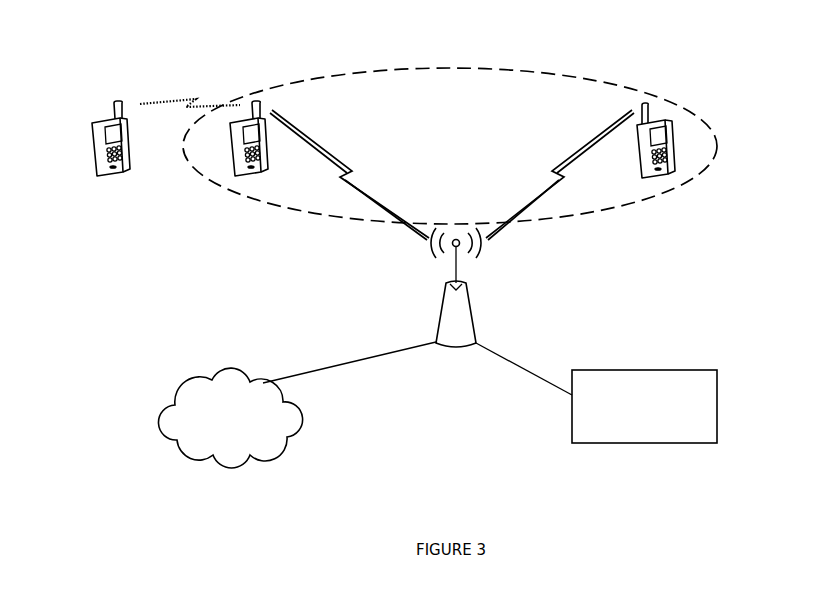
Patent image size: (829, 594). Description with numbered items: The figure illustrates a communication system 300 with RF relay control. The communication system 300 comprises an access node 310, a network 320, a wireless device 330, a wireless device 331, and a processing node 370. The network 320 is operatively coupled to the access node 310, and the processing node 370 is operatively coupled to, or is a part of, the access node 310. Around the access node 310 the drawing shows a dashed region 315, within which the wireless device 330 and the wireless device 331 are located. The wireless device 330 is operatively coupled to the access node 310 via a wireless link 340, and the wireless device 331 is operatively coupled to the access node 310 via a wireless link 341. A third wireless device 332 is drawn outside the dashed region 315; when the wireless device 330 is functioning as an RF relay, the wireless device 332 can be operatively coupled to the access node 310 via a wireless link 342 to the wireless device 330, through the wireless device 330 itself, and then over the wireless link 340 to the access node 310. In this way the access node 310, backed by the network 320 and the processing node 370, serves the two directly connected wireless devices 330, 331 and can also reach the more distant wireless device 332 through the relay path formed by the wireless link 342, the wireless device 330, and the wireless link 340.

The communication system 300 is at (86, 22).
The access node 310 is at (457, 349).
The coverage area 315 is at (583, 214).
The network 320 is at (230, 418).
The wireless device 330 is at (237, 176).
The wireless device 331 is at (672, 177).
The wireless device 332 is at (100, 176).
The wireless link 340 is at (345, 177).
The wireless link 341 is at (561, 176).
The wireless link 342 is at (192, 97).
The processing node 370 is at (644, 406).